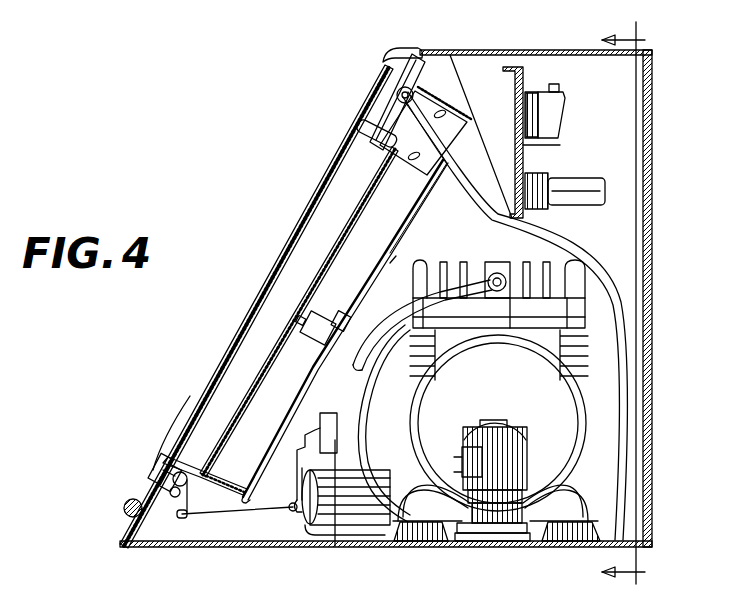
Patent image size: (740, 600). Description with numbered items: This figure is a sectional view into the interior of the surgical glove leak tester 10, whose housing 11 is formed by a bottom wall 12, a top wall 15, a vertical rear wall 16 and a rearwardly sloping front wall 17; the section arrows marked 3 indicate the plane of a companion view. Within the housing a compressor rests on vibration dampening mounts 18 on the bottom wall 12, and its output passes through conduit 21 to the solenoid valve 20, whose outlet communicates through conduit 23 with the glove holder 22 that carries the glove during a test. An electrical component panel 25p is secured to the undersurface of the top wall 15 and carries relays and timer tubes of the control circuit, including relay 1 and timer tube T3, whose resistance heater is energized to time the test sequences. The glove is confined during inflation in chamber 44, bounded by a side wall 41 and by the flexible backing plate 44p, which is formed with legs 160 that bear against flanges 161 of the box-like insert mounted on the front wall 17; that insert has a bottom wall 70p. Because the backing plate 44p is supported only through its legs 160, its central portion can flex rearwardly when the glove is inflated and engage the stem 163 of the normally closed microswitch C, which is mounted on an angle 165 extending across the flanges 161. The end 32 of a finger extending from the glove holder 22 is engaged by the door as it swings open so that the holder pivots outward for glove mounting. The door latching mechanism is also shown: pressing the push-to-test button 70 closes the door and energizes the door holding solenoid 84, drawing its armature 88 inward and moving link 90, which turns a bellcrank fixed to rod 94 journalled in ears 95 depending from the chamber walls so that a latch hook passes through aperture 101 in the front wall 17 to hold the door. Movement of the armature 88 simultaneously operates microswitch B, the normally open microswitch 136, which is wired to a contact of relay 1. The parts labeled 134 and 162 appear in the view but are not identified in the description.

The relay 1 is at (566, 114).
The section line 3 is at (631, 310).
The leak tester 10 is at (668, 79).
The housing 11 is at (652, 292).
The bottom wall 12 is at (500, 548).
The top wall 15 is at (568, 50).
The vertical rear wall 16 is at (652, 248).
The rearwardly sloping front wall 17 is at (147, 500).
The vibration dampening mounts 18 is at (425, 548).
The solenoid valve 20 is at (530, 455).
The conduit 21 is at (373, 413).
The glove holder 22 is at (360, 132).
The conduit 23 is at (578, 259).
The electrical component panel 25p is at (492, 130).
The end of finger 32 is at (392, 55).
The side wall of chamber 41 is at (424, 190).
The chamber 44 is at (295, 272).
The flexible backing plate 44p is at (345, 226).
The push-to-test button 70 is at (170, 413).
The bottom wall of box-like insert 70p is at (192, 466).
The door holding solenoid 84 is at (353, 468).
The armature 88 is at (305, 517).
The link 90 is at (213, 512).
The rod 94 is at (189, 482).
The ears 95 is at (203, 481).
The aperture 101 is at (145, 484).
The drum bottom 134 is at (250, 388).
The microswitch 136 is at (324, 416).
The legs 160 is at (405, 220).
The flanges 161 is at (390, 263).
The panel wall 162 is at (400, 244).
The stem 163 is at (297, 324).
The angle 165 is at (357, 317).
The microswitch B is at (328, 428).
The microswitch C is at (318, 311).
The timer tube T3 is at (578, 203).